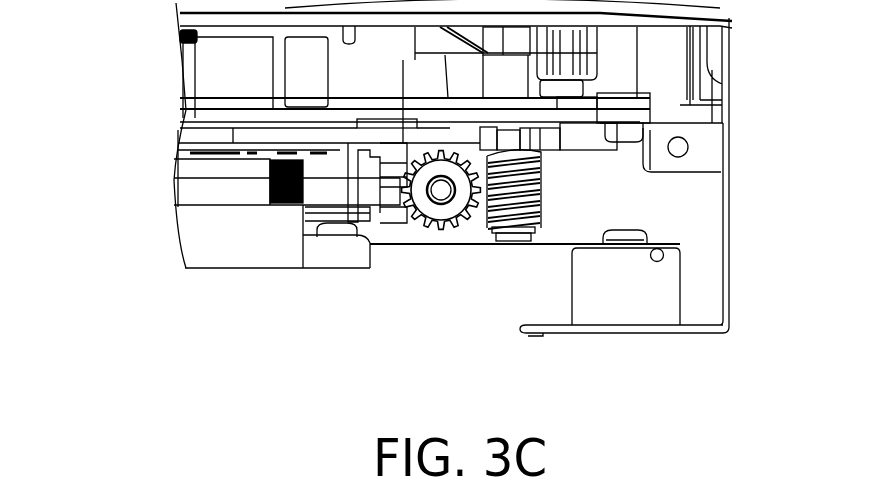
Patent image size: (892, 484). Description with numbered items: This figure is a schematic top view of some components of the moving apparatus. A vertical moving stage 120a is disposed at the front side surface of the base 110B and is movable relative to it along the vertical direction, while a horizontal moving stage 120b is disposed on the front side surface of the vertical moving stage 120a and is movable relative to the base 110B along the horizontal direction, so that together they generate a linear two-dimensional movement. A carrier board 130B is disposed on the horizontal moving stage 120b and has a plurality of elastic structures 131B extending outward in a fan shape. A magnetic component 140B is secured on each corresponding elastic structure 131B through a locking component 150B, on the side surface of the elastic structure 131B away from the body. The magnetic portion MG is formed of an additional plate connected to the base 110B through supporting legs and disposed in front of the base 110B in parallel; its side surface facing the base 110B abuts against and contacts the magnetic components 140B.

The base 110B is at (633, 113).
The vertical moving stage 120a is at (317, 140).
The horizontal moving stage 120b is at (313, 265).
The carrier board 130B is at (345, 238).
The elastic structure 131B is at (510, 244).
The magnetic component 140B is at (672, 289).
The locking component 150B is at (643, 232).
The magnetic portion MG is at (663, 334).